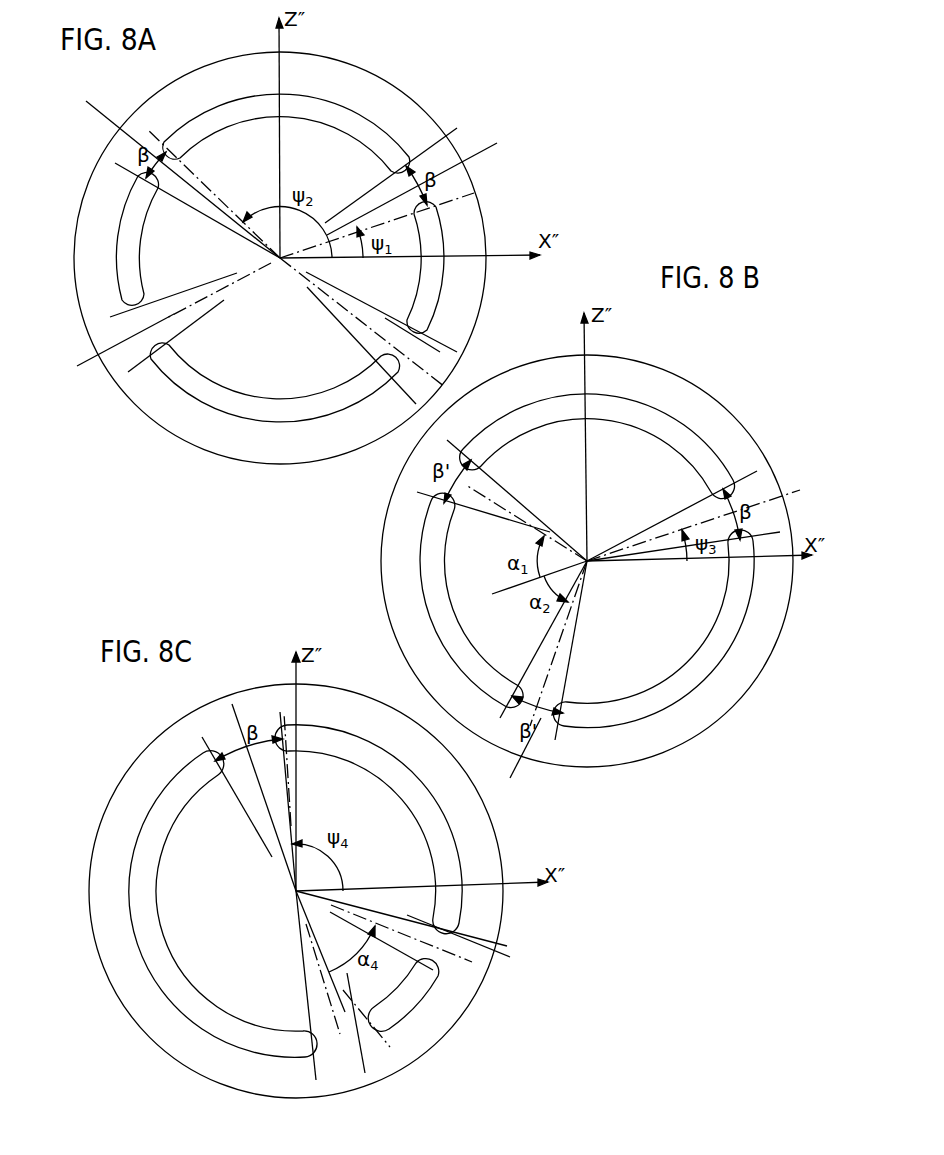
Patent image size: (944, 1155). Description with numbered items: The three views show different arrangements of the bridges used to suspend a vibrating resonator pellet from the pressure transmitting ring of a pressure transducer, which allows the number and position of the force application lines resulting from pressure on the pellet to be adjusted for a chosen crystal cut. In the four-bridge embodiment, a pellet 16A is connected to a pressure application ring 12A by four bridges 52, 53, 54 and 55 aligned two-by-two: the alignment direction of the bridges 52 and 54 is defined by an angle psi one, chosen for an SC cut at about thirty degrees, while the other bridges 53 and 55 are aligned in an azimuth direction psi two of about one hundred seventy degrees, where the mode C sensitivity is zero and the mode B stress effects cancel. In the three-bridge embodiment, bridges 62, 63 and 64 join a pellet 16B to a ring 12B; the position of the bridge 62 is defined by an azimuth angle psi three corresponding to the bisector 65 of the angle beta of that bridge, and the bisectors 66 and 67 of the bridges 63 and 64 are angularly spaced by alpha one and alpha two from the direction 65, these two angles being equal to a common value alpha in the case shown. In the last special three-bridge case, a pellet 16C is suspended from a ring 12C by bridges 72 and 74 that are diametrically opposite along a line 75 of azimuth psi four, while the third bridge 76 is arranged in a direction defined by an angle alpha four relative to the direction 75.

In FIG. 8A, the pressure application ring 12A is at (412, 110).
In FIG. 8A, the pellet 16A is at (235, 138).
In FIG. 8A, the bridge 52 is at (153, 337).
In FIG. 8A, the bridge 53 is at (170, 163).
In FIG. 8A, the bridge 54 is at (385, 187).
In FIG. 8A, the bridge 55 is at (400, 350).
In FIG. 8B, the ring 12B is at (730, 428).
In FIG. 8B, the pellet 16B is at (641, 448).
In FIG. 8B, the bridge 62 is at (720, 542).
In FIG. 8B, the bridge 63 is at (475, 478).
In FIG. 8B, the bridge 64 is at (535, 673).
In FIG. 8B, the bisector 65 is at (658, 537).
In FIG. 8B, the bisector 66 is at (496, 508).
In FIG. 8B, the bisector 67 is at (573, 637).
In FIG. 8C, the ring 12C is at (135, 782).
In FIG. 8C, the pellet 16C is at (205, 945).
In FIG. 8C, the bridge 72 is at (240, 788).
In FIG. 8C, the bridge 74 is at (333, 1040).
In FIG. 8C, the line 75 is at (272, 823).
In FIG. 8C, the third bridge 76 is at (447, 935).